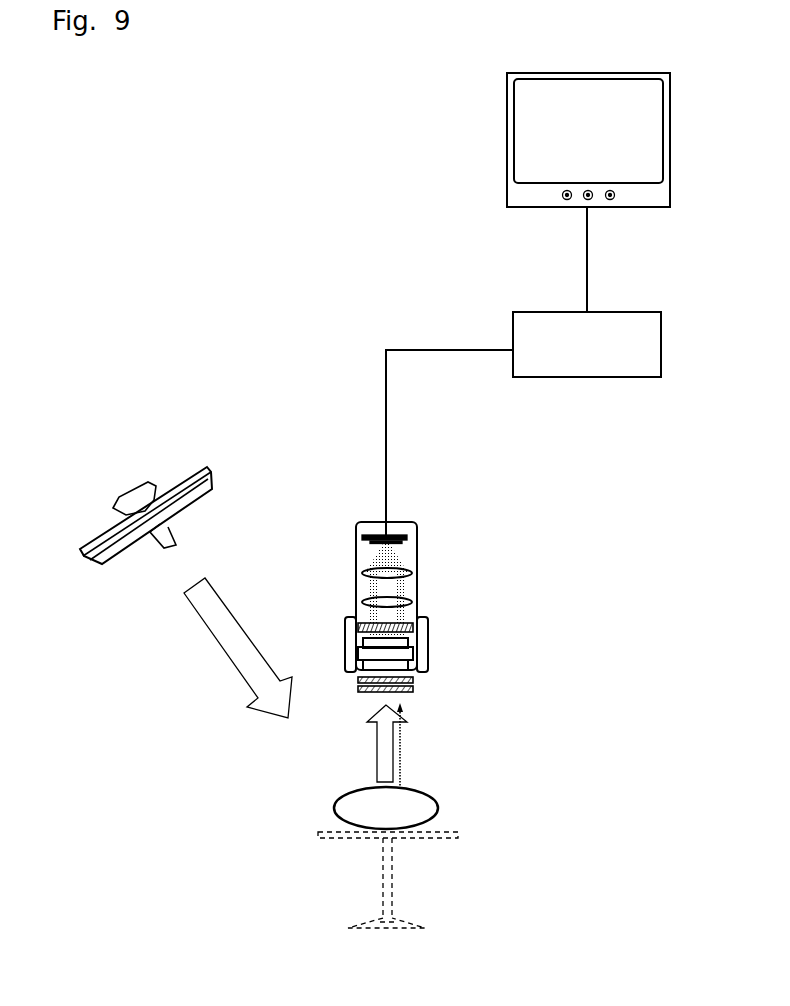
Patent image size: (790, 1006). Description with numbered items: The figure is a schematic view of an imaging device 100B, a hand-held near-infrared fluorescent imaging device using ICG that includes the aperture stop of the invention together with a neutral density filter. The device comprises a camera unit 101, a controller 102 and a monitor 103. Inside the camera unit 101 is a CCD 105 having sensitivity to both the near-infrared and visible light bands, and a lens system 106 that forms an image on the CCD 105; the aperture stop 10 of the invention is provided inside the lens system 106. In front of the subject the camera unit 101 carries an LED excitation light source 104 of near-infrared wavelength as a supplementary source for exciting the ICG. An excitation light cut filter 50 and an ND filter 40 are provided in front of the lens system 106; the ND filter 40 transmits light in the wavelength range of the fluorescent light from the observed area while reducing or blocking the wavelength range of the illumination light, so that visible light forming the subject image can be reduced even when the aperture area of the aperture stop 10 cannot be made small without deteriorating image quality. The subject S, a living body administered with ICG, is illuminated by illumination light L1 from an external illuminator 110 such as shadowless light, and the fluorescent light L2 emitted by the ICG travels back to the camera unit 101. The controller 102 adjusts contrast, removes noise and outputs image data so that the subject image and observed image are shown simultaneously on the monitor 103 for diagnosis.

The monitor 103 is at (588, 140).
The controller 102 is at (523, 372).
The external illuminator 110 is at (188, 468).
The illumination light L1 is at (238, 648).
The camera unit 101 is at (356, 533).
The CCD 105 is at (408, 536).
The lens system 106 is at (408, 572).
The aperture stop 10 is at (403, 622).
The LED excitation light source 104 is at (425, 652).
The ND filter 40 is at (413, 680).
The excitation light cut filter 50 is at (413, 692).
The fluorescent light L2 is at (403, 752).
The subject S is at (438, 795).
The imaging device 100B is at (633, 817).